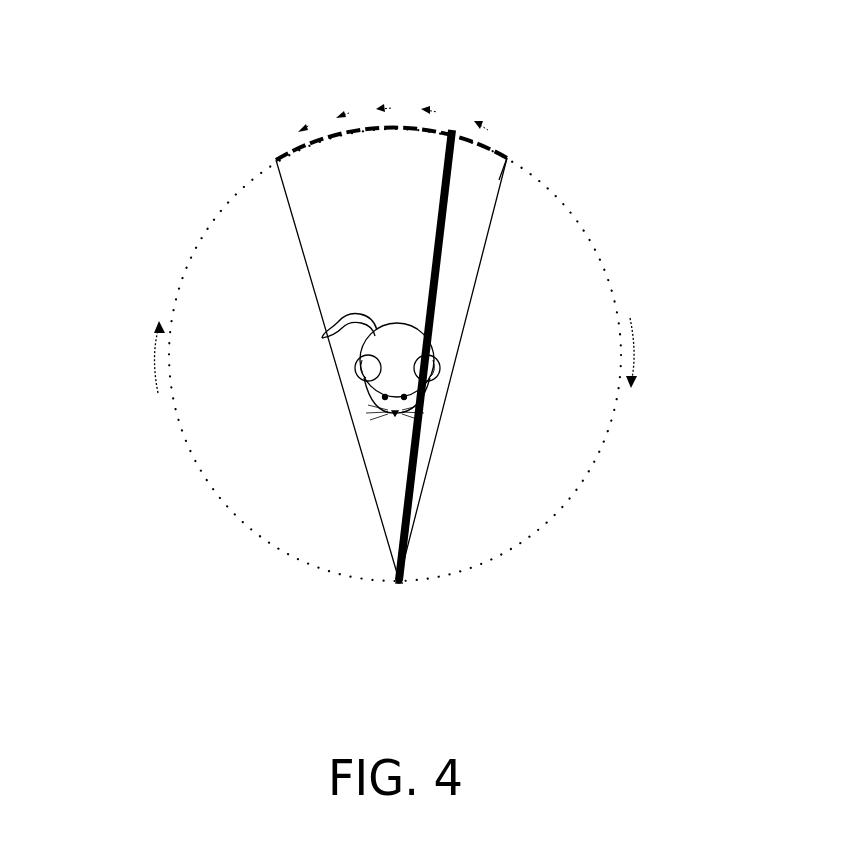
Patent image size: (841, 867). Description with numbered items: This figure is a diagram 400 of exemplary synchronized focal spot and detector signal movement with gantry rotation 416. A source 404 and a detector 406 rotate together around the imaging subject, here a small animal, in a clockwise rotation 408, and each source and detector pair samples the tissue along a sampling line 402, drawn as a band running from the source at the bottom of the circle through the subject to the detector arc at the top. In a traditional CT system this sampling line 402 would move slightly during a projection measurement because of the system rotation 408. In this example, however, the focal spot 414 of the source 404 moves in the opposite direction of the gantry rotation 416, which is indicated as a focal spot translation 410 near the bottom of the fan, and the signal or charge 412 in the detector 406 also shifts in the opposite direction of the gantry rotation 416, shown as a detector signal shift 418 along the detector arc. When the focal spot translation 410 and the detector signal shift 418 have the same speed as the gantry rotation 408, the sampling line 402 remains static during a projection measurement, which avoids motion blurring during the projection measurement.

The diagram 400 is at (228, 99).
The sampling line 402 is at (458, 252).
The source 404 is at (428, 580).
The detector 406 is at (503, 155).
The clockwise rotation 408 is at (635, 352).
The focal spot translation 410 is at (418, 583).
The signal or charge 412 is at (390, 105).
The focal spot 414 is at (393, 587).
The gantry rotation 416 is at (157, 355).
The detector signal shift 418 is at (301, 128).